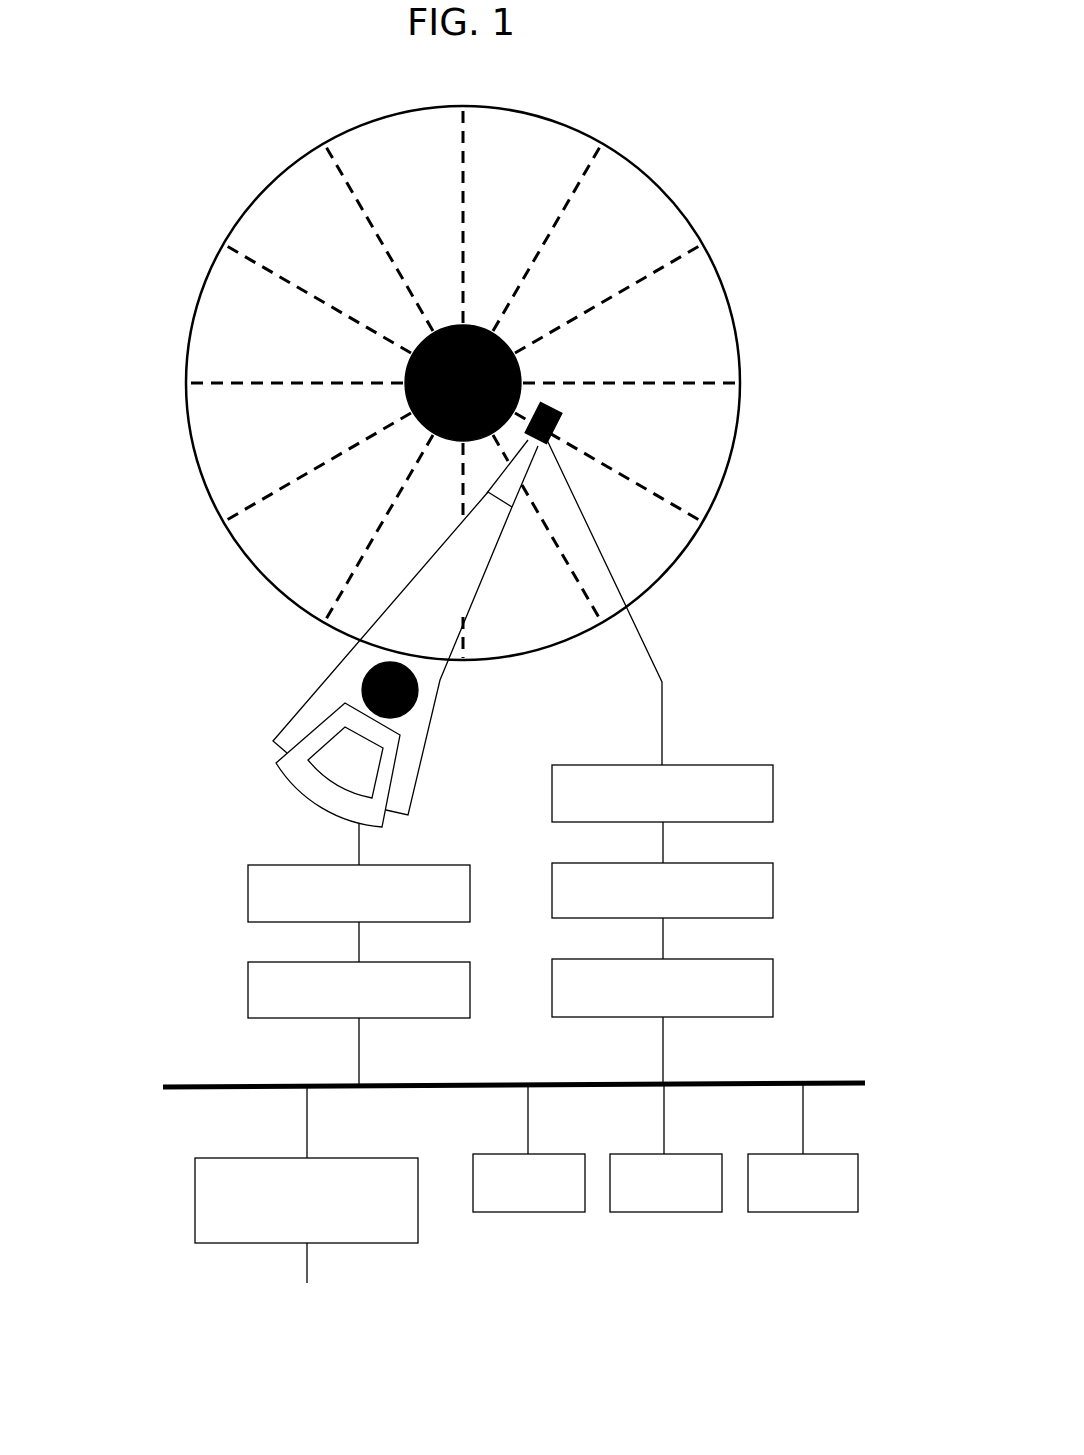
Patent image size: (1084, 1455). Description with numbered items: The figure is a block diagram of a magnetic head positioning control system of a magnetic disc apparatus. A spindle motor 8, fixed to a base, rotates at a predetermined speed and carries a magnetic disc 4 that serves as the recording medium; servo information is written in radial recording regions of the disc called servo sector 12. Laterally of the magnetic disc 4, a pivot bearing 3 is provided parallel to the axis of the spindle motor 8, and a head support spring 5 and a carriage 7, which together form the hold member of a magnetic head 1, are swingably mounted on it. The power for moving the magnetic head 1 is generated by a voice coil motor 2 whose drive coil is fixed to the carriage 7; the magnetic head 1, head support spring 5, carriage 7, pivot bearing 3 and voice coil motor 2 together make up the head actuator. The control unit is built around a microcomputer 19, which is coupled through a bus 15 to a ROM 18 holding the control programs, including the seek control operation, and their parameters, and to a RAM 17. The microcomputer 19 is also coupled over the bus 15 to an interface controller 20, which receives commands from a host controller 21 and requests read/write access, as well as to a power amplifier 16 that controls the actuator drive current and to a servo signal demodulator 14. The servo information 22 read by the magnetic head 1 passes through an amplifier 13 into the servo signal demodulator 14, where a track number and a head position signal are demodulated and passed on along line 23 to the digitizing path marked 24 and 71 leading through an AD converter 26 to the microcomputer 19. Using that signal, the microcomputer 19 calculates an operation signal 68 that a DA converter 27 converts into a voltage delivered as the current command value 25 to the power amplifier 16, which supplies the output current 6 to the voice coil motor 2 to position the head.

The magnetic head 1 is at (562, 413).
The voice coil motor 2 is at (275, 767).
The pivot bearing 3 is at (361, 672).
The magnetic disc 4 is at (737, 323).
The head support spring 5 is at (517, 489).
The current 6 is at (358, 846).
The carriage 7 is at (437, 686).
The spindle motor 8 is at (450, 326).
The servo sector 12 is at (702, 240).
The amplifier 13 is at (773, 795).
The servo signal demodulator 14 is at (773, 888).
The bus 15 is at (865, 1083).
The power amplifier 16 is at (248, 893).
The RAM 17 is at (803, 1212).
The ROM 18 is at (665, 1212).
The microcomputer 19 is at (528, 1212).
The interface controller 20 is at (195, 1200).
The host controller 21 is at (188, 1310).
The servo information 22 is at (662, 722).
The amplified signal line 23 is at (663, 843).
The demodulated signal line 24 is at (663, 938).
The current command value 25 is at (359, 942).
The AD converter 26 is at (773, 985).
The DA converter 27 is at (248, 992).
The operation signal 68 is at (359, 1039).
The digital servo signal line 71 is at (663, 1040).